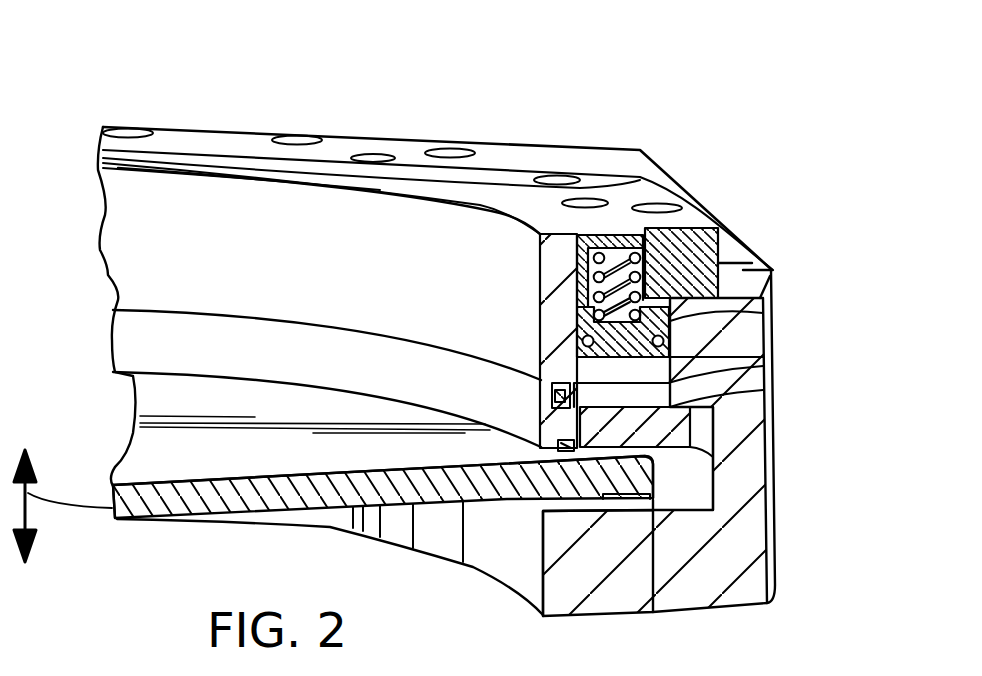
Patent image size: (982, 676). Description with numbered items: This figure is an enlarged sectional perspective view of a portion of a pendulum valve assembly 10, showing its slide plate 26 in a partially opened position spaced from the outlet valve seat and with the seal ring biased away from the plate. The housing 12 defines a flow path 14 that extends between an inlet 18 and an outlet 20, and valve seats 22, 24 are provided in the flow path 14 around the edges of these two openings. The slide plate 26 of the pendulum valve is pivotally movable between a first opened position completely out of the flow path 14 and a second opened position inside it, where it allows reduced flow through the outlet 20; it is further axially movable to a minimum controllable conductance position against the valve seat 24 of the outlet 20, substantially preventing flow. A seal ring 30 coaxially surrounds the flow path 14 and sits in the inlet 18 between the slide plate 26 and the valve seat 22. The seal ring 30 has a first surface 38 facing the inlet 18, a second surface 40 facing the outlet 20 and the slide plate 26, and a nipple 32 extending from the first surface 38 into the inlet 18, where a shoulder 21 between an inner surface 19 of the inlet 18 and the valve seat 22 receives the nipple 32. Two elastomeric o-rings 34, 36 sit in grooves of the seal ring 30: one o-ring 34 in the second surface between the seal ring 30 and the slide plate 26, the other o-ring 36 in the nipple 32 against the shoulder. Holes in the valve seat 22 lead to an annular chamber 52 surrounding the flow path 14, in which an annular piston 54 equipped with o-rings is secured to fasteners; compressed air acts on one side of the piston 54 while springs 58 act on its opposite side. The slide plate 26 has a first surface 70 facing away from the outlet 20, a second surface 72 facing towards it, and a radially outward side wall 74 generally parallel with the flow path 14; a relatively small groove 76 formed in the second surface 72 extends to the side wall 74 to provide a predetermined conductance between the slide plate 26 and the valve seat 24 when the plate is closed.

The pendulum valve assembly 10 is at (723, 92).
The housing 12 is at (777, 515).
The flow path 14 is at (259, 246).
The inlet 18 is at (472, 232).
The inner surface 19 is at (518, 245).
The outlet 20 is at (480, 572).
The shoulder 21 is at (457, 347).
The valve seat 22 is at (765, 385).
The valve seat 24 is at (580, 616).
The slide plate 26 is at (250, 524).
The seal ring 30 is at (279, 362).
The nipple 32 is at (385, 347).
The o-ring 34 is at (560, 447).
The o-ring 36 is at (552, 397).
The first surface 38 is at (765, 413).
The second surface 40 is at (713, 460).
The annular chamber 52 is at (768, 354).
The annular piston 54 is at (760, 322).
The springs 58 is at (634, 252).
The first surface 70 is at (176, 475).
The second surface 72 is at (152, 521).
The side wall 74 is at (657, 475).
The groove 76 is at (650, 607).